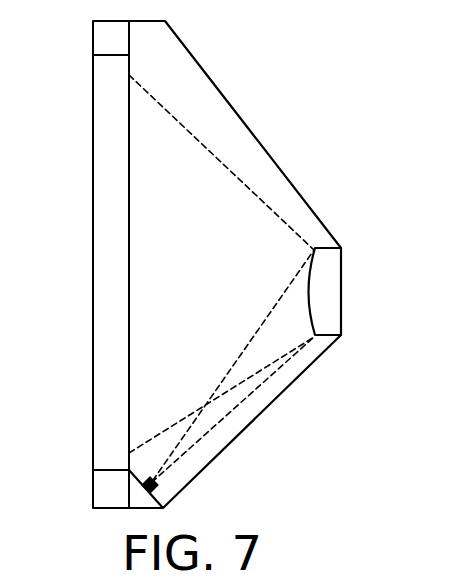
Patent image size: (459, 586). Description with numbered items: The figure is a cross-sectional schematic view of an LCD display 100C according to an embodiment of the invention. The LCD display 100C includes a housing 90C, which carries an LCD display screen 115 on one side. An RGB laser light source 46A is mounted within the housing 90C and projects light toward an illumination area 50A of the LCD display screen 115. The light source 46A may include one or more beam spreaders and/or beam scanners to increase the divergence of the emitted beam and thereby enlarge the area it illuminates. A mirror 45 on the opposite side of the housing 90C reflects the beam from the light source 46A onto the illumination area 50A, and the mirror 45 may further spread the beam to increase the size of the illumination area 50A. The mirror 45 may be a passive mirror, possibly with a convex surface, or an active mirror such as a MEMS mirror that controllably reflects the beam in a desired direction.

The LCD display 100C is at (272, 38).
The LCD display screen 115 is at (93, 160).
The illumination area 50A is at (129, 247).
The housing 90C is at (222, 92).
The mirror 45 is at (341, 290).
The RGB laser light source 46A is at (156, 488).